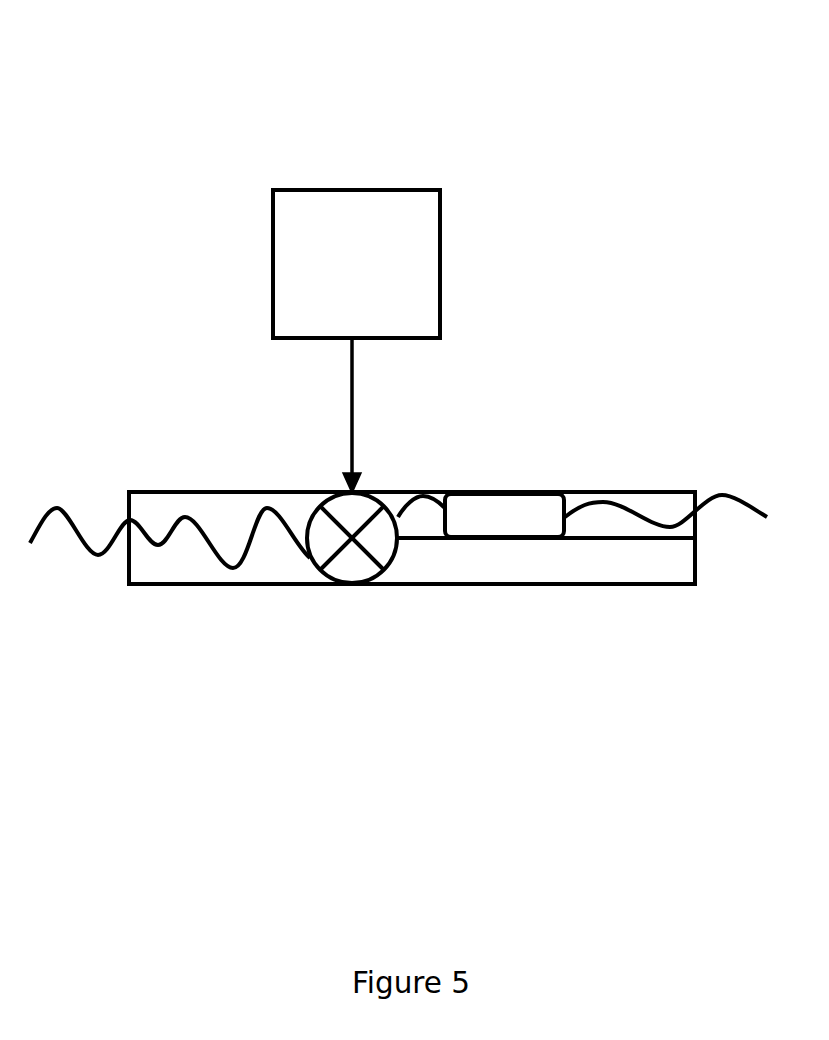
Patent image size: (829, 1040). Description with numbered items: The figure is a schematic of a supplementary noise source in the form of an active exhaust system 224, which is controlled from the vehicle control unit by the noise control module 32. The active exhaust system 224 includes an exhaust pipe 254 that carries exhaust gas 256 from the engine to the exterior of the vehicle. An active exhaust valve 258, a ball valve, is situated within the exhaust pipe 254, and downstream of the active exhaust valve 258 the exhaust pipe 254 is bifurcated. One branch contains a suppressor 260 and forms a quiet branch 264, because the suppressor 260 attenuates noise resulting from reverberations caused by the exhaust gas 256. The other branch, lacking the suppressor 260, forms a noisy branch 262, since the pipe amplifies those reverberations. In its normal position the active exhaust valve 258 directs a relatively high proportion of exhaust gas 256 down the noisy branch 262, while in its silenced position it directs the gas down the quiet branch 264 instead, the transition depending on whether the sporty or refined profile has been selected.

The noise control module 32 is at (363, 190).
The active exhaust system 224 is at (398, 529).
The exhaust pipe 254 is at (225, 492).
The exhaust gas 256 is at (207, 538).
The active exhaust valve 258 is at (387, 491).
The suppressor 260 is at (517, 513).
The noisy branch 262 is at (537, 565).
The quiet branch 264 is at (658, 505).